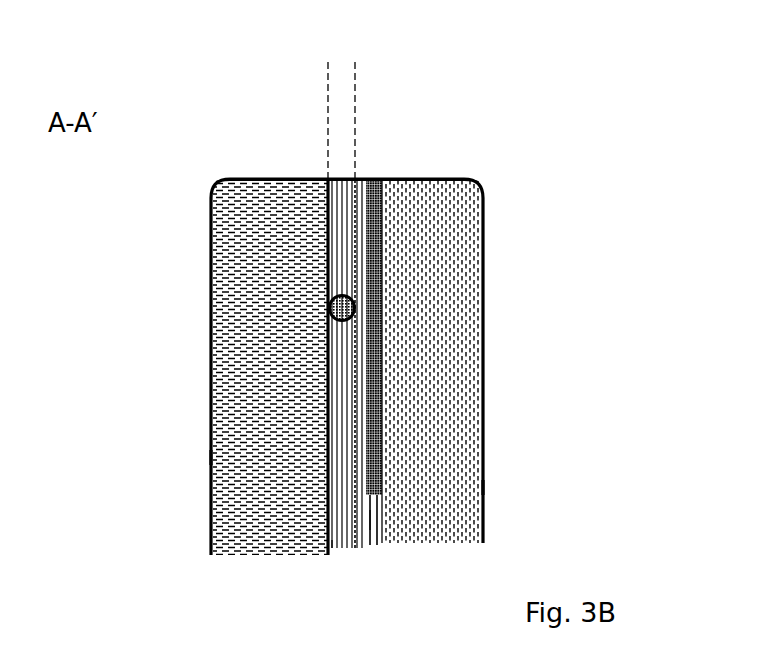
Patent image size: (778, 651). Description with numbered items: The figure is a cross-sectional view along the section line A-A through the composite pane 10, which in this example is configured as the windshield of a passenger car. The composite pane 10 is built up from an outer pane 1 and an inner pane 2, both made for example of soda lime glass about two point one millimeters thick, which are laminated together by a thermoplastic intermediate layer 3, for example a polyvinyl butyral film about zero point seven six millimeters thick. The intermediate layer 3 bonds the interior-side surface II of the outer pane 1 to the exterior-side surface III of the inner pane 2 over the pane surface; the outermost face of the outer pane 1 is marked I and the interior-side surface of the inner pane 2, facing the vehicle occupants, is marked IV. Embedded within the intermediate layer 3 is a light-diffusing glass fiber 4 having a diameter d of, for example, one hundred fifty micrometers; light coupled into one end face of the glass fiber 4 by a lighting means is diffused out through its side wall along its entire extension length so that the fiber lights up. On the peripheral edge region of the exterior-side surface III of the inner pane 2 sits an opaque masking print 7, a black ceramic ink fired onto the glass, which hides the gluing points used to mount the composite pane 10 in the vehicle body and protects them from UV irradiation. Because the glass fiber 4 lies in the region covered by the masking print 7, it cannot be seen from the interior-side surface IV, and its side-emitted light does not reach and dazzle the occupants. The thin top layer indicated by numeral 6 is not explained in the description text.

The outer pane 1 is at (230, 293).
The inner pane 2 is at (453, 361).
The thermoplastic intermediate layer 3 is at (345, 402).
The light-diffusing glass fiber 4 is at (348, 297).
The top cover layer 6 is at (255, 168).
The opaque masking print 7 is at (383, 338).
The composite pane 10 is at (545, 89).
The diameter d is at (287, 62).
The section I is at (204, 458).
The interior-side surface of the outer pane II is at (343, 548).
The exterior-side surface of the inner pane III is at (362, 520).
The interior-side surface of the inner pane IV is at (490, 487).